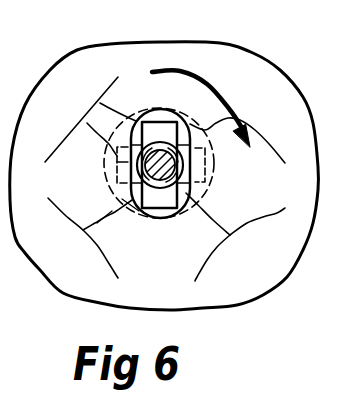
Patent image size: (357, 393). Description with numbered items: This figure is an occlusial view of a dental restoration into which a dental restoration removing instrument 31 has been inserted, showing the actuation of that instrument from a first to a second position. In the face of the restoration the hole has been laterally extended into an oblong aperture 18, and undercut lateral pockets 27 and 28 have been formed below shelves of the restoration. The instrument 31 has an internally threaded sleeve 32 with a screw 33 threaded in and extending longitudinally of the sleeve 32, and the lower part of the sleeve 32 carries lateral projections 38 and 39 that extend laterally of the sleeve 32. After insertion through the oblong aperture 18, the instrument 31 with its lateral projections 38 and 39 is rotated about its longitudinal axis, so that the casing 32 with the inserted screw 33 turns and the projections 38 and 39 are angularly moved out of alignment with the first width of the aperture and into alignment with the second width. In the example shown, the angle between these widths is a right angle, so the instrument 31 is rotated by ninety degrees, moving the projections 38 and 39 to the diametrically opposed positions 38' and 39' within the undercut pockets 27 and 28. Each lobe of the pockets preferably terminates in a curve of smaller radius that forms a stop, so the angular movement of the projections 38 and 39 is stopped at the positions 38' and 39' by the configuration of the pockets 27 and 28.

The oblong aperture 18 is at (97, 102).
The undercut lateral pocket 27 is at (110, 183).
The undercut lateral pocket 28 is at (187, 114).
The dental restoration removing instrument 31 is at (211, 196).
The internally threaded sleeve 32 is at (82, 230).
The screw 33 is at (139, 211).
The lateral projection 38 is at (160, 188).
The moved position of lateral projection 38' is at (130, 163).
The lateral projection 39 is at (141, 136).
The moved position of lateral projection 39' is at (183, 163).